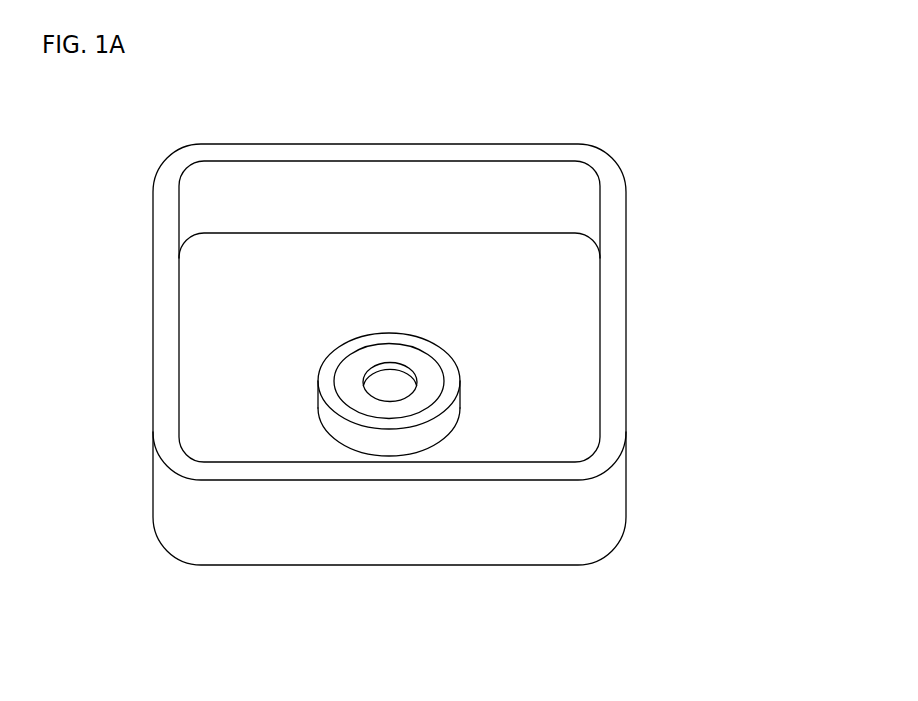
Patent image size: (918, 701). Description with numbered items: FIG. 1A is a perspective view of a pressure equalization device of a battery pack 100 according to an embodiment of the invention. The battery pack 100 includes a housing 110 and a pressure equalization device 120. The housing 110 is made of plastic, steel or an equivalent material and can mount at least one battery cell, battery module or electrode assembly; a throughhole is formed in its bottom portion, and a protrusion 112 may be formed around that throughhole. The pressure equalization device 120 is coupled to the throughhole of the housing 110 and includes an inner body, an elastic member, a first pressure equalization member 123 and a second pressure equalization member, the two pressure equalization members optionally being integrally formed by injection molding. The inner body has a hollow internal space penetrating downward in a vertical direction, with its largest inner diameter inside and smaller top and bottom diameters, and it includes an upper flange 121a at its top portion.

The battery pack 100 is at (99, 105).
The housing 110 is at (616, 223).
The pressure equalization device 120 is at (475, 477).
The upper flange 121a is at (352, 388).
The first pressure equalization member 123 is at (392, 385).
The protrusion 112 is at (387, 421).